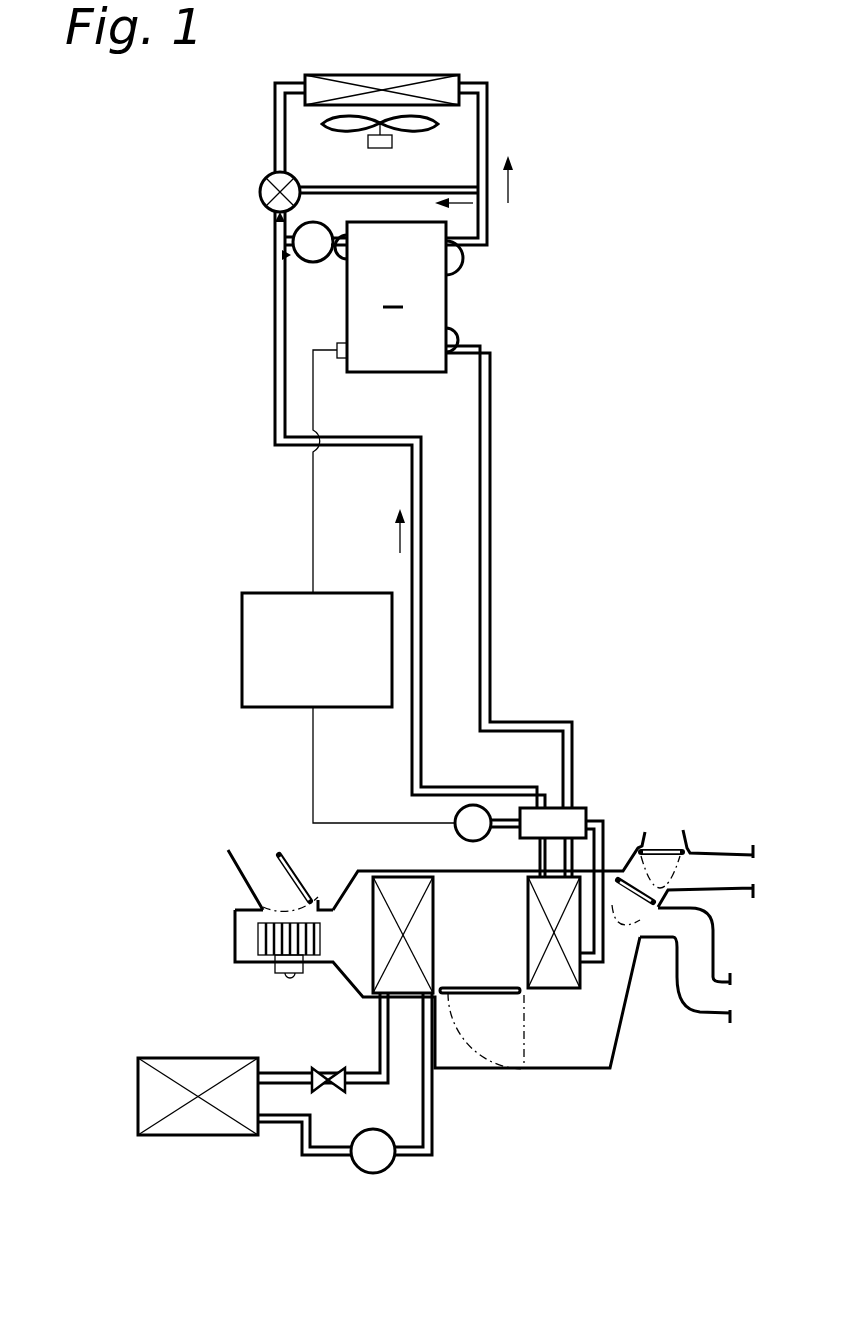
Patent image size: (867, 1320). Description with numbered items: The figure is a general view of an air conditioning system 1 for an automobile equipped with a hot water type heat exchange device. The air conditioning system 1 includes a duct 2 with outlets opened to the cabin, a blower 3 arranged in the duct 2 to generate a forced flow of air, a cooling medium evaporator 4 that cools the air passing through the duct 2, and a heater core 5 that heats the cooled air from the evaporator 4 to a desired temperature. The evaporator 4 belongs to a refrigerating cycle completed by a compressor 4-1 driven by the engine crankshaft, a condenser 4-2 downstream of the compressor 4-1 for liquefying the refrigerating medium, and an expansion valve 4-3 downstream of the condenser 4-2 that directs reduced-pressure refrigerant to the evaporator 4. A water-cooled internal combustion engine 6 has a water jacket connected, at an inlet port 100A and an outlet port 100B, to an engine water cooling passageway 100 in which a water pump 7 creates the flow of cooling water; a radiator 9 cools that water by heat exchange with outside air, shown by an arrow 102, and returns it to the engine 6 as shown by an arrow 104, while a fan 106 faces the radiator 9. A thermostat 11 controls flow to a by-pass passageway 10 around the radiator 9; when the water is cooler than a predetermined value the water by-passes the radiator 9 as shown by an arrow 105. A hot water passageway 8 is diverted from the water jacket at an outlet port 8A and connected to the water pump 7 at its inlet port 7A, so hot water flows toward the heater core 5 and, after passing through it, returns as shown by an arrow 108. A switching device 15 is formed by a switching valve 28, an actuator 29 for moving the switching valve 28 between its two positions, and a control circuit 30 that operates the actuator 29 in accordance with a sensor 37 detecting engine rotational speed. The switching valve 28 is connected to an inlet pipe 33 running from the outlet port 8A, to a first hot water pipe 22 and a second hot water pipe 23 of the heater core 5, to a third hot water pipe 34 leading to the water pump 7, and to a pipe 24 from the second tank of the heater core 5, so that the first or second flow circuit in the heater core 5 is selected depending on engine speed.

The air conditioning system 1 is at (570, 703).
The duct 2 is at (475, 1065).
The blower 3 is at (275, 968).
The cooling medium evaporator 4 is at (373, 952).
The compressor 4-1 is at (383, 1172).
The condenser 4-2 is at (218, 1136).
The expansion valve 4-3 is at (338, 1068).
The heater core 5 is at (555, 985).
The water-cooled internal combustion engine 6 is at (396, 297).
The water pump 7 is at (282, 233).
The inlet port 7A is at (284, 255).
The hot water passageway 8 is at (500, 557).
The outlet port 8A is at (458, 330).
The radiator 9 is at (387, 75).
The by-pass passageway 10 is at (423, 185).
The thermostat 11 is at (262, 192).
The switching device 15 is at (585, 786).
The first hot water pipe 22 is at (630, 958).
The second hot water pipe 23 is at (598, 848).
The pipe 24 is at (570, 851).
The switching valve 28 is at (588, 815).
The actuator 29 is at (455, 815).
The control circuit 30 is at (242, 620).
The inlet pipe 33 is at (557, 760).
The third hot water pipe 34 is at (421, 752).
The sensor 37 is at (337, 350).
The engine water cooling passageway 100 is at (505, 91).
The inlet port 100A is at (346, 257).
The outlet port 100B is at (463, 262).
The arrow 102 is at (509, 190).
The arrow 104 is at (270, 218).
The arrow 105 is at (473, 203).
The fan 106 is at (437, 118).
The arrow 108 is at (398, 539).